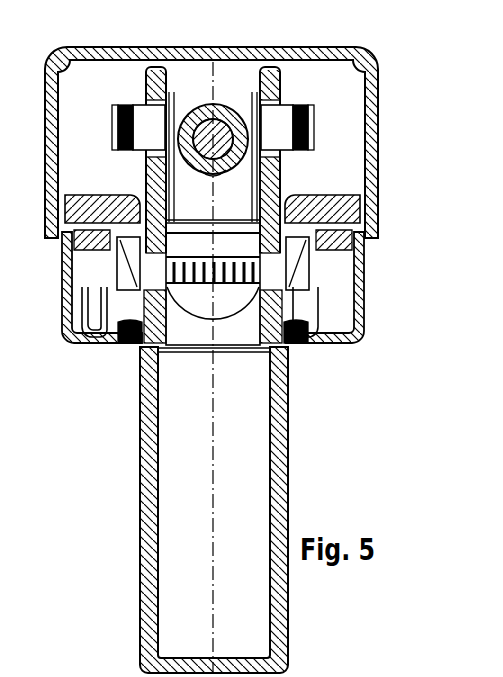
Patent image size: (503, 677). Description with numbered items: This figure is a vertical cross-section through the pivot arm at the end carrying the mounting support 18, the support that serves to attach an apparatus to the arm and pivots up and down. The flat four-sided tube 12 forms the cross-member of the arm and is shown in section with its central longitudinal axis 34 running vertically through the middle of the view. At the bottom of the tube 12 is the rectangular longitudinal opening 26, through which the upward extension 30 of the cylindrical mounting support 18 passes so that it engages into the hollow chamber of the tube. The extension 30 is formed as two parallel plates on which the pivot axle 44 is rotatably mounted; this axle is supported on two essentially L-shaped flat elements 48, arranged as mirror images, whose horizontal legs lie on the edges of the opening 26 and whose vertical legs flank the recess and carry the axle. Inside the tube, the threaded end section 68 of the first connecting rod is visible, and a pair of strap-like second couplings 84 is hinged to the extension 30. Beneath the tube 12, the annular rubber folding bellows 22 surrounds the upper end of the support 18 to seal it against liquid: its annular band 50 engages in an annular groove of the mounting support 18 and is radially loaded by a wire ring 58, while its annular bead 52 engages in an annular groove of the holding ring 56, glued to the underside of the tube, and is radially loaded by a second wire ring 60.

The four-sided tube 12 is at (107, 48).
The mounting support 18 is at (138, 472).
The folding bellows 22 is at (347, 357).
The longitudinal opening 26 is at (164, 197).
The extension 30 is at (268, 66).
The central longitudinal axis 34 is at (224, 178).
The pivot axle 44 is at (188, 350).
The L-shaped flat element 48 is at (93, 195).
The annular band 50 is at (292, 350).
The annular bead 52 is at (358, 252).
The holding ring 56 is at (64, 278).
The wire ring 58 is at (118, 348).
The wire ring 60 is at (60, 246).
The threaded end section 68 is at (226, 105).
The second couplings 84 is at (140, 100).